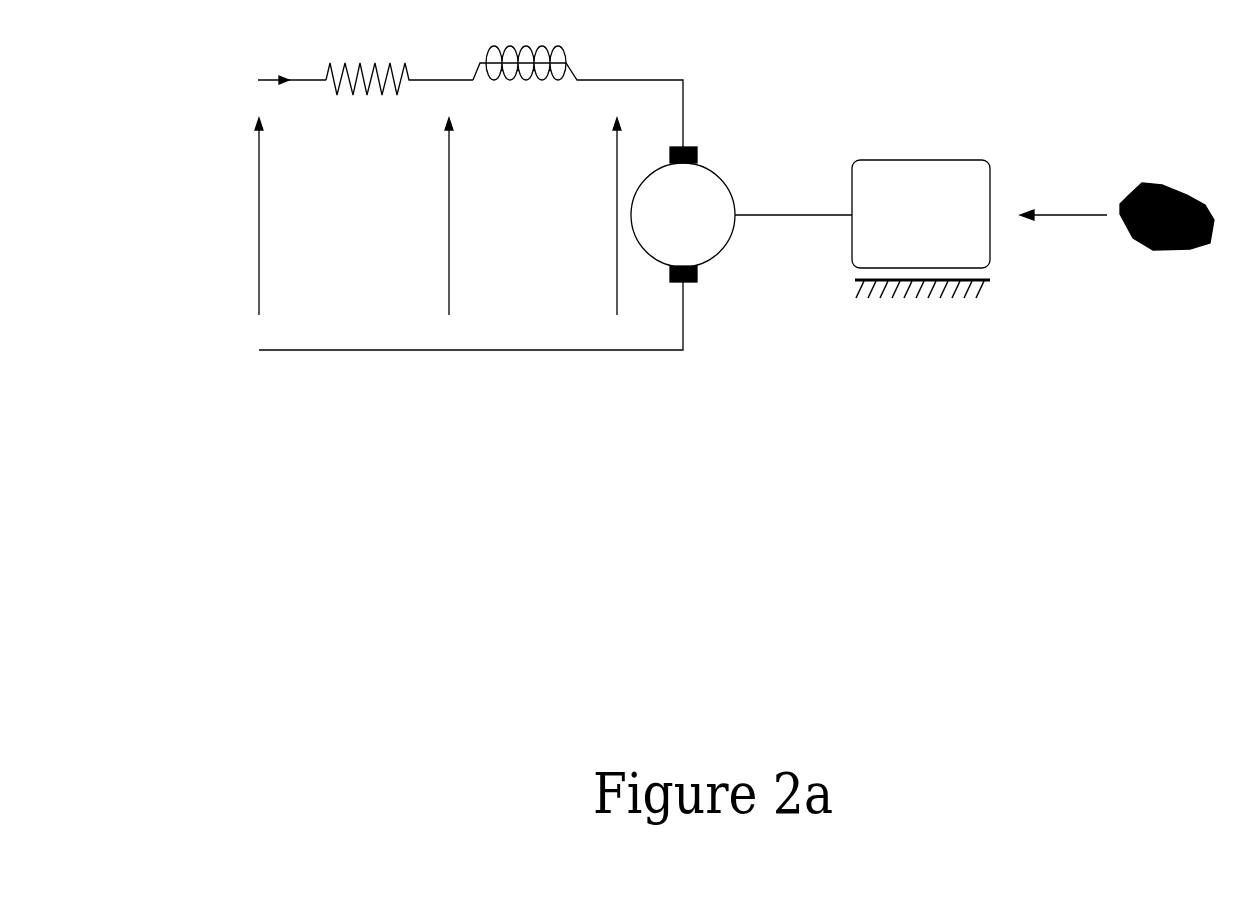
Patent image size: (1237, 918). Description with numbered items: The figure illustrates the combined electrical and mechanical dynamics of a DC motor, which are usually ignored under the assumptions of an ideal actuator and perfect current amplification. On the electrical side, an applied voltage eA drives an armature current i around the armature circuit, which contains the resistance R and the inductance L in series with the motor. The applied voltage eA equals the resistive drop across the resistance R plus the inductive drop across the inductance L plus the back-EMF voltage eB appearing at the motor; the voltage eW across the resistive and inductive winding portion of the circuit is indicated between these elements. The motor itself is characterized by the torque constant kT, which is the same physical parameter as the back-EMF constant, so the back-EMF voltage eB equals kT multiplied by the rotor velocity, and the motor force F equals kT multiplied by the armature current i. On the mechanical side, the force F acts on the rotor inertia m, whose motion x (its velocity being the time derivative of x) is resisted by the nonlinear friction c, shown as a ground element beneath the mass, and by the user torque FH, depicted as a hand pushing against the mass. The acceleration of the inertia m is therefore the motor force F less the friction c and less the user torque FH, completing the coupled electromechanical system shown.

The armature current i is at (292, 57).
The resistance R is at (399, 106).
The inductance L is at (578, 98).
The applied voltage eA is at (227, 216).
The winding voltage eW is at (416, 216).
The back-EMF voltage eB is at (584, 216).
The torque constant kT is at (497, 248).
The motor force F is at (793, 192).
The rotor motion x is at (778, 255).
The rotor inertia m is at (921, 214).
The friction c is at (935, 312).
The user torque FH is at (1117, 208).